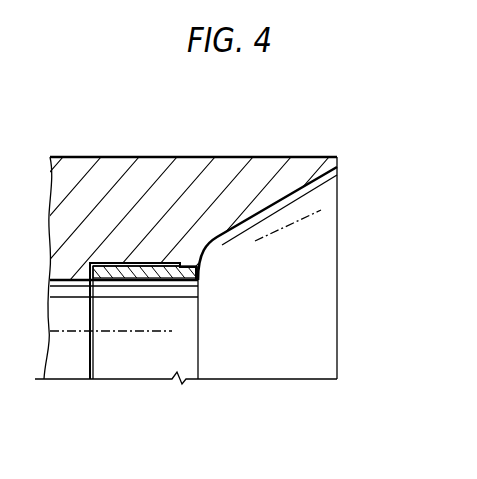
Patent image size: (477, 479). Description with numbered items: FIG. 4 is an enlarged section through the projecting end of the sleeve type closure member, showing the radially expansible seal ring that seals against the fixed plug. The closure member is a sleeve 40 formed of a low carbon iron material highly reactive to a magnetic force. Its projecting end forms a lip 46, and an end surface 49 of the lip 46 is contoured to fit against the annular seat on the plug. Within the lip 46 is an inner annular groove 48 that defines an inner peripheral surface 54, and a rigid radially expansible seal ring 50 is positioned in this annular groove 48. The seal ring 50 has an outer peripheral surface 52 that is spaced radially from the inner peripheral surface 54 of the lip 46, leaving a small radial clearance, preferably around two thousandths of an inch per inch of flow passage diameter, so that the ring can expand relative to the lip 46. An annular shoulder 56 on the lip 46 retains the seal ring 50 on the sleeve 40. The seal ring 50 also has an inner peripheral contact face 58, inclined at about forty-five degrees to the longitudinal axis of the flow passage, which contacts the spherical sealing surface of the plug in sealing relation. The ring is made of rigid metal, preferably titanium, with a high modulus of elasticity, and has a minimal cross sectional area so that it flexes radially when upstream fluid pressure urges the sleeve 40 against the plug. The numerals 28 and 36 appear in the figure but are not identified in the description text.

The support structure 28 is at (10, 126).
The wall 36 is at (11, 208).
The sleeve 40 is at (193, 172).
The lip 46 is at (227, 212).
The inner annular groove 48 is at (92, 312).
The end surface 49 is at (287, 197).
The seal ring 50 is at (133, 284).
The outer peripheral surface 52 is at (130, 266).
The inner peripheral surface 54 is at (166, 265).
The annular shoulder 56 is at (177, 280).
The inner peripheral contact face 58 is at (198, 279).